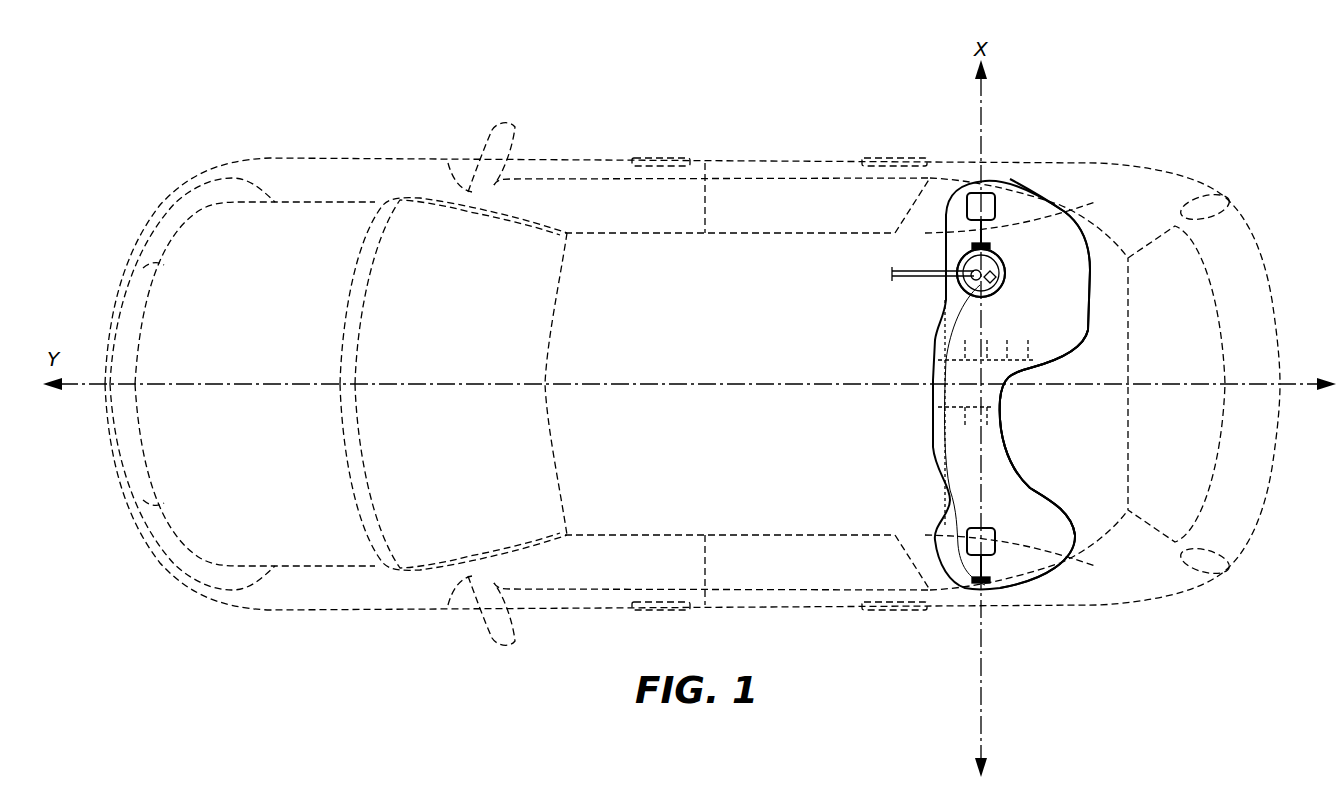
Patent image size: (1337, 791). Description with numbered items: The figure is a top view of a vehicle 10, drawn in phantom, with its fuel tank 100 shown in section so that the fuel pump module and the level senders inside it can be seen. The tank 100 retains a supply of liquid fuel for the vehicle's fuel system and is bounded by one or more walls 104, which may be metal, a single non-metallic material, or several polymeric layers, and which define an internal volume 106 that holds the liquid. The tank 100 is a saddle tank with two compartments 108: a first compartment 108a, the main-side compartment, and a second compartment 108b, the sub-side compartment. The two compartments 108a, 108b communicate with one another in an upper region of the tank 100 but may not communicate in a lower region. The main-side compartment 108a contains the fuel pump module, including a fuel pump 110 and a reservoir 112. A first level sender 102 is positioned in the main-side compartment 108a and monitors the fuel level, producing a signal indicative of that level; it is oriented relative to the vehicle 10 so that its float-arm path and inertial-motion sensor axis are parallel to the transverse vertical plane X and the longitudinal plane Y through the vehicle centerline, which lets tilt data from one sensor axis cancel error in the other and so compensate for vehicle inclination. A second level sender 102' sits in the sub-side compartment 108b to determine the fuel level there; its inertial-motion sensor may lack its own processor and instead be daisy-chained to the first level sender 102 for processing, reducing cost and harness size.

The vehicle 10 is at (582, 135).
The tank 100 is at (1088, 218).
The level sender 102 is at (919, 221).
The second level sender 102' is at (1053, 555).
The wall 104 is at (1085, 306).
The internal volume 106 is at (1073, 270).
The compartments 108 is at (1044, 350).
The first compartment 108a is at (1070, 334).
The second compartment 108b is at (1045, 495).
The fuel pump 110 is at (992, 262).
The reservoir 112 is at (1003, 283).